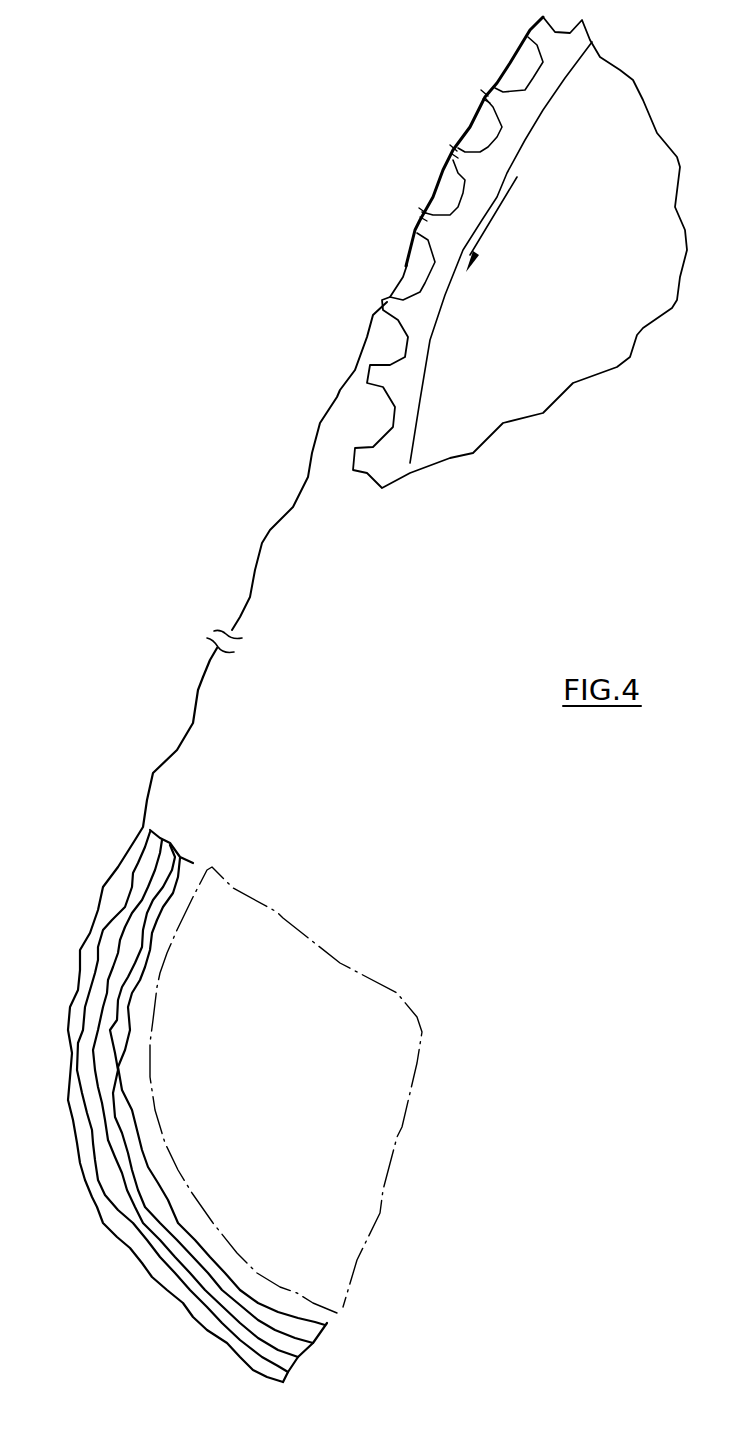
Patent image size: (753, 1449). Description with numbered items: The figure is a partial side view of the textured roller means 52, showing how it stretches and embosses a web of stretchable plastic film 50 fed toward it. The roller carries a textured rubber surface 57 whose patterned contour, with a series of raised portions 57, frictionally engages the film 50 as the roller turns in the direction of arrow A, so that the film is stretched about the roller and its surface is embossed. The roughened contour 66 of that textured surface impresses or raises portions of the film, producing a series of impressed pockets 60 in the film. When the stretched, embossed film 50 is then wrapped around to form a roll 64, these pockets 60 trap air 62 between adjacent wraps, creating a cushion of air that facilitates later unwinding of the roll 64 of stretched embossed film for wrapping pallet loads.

The web of stretchable plastic film 50 is at (510, 64).
The textured roller means 52 is at (629, 259).
The textured rubber surface 57 is at (481, 90).
The roughened contour 66 is at (413, 250).
The impressed pockets 60 is at (317, 423).
The air 62 is at (77, 988).
The roll 64 is at (226, 1071).